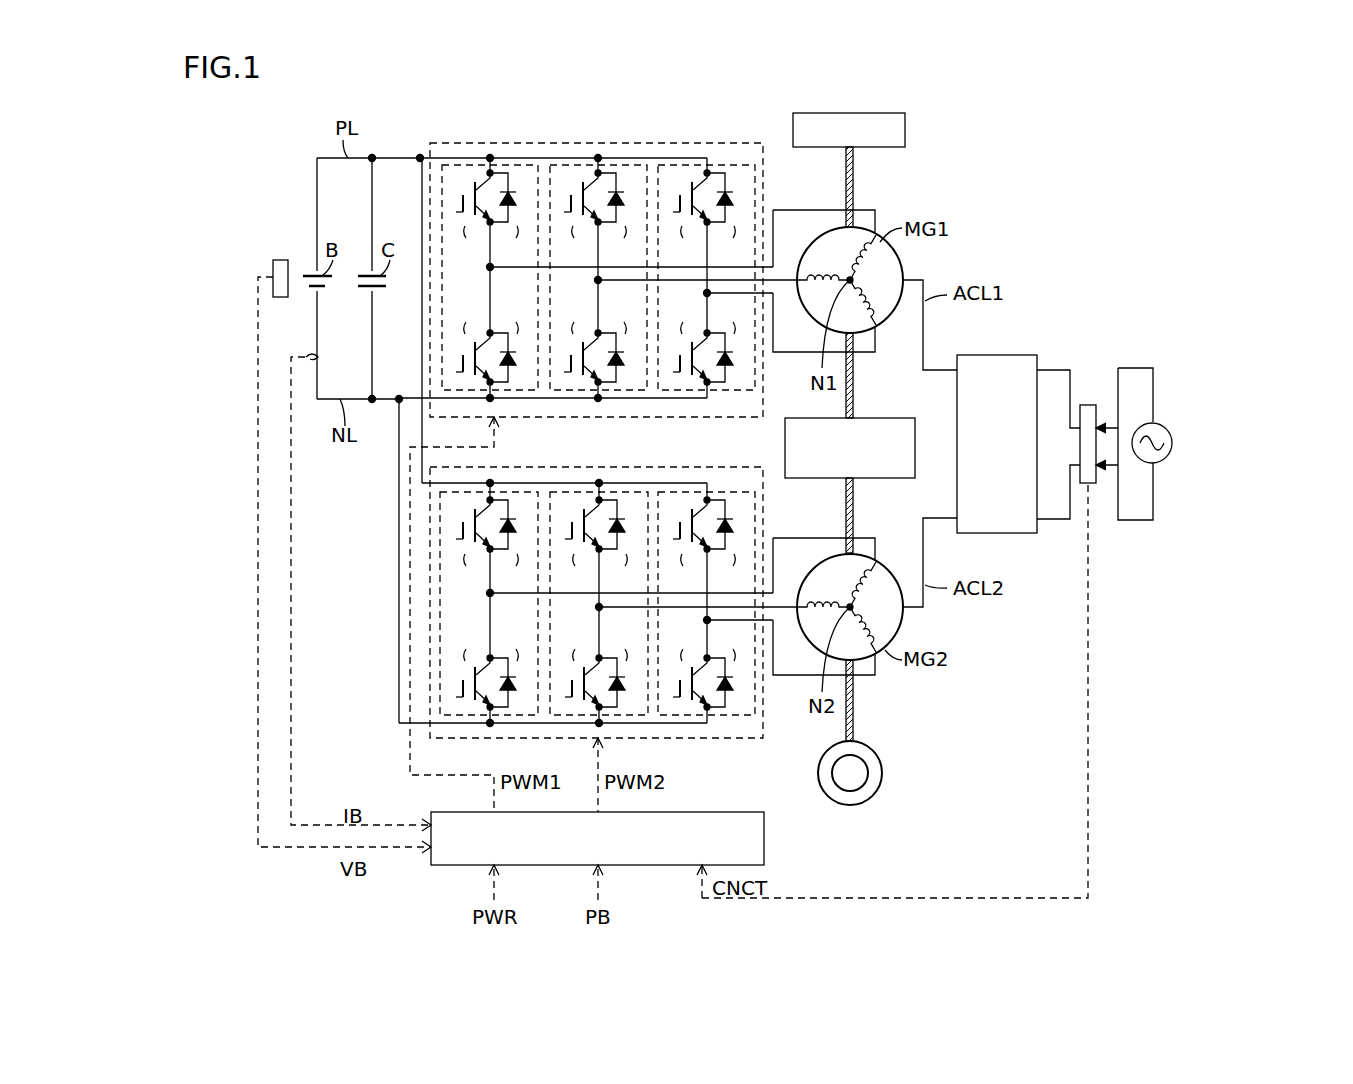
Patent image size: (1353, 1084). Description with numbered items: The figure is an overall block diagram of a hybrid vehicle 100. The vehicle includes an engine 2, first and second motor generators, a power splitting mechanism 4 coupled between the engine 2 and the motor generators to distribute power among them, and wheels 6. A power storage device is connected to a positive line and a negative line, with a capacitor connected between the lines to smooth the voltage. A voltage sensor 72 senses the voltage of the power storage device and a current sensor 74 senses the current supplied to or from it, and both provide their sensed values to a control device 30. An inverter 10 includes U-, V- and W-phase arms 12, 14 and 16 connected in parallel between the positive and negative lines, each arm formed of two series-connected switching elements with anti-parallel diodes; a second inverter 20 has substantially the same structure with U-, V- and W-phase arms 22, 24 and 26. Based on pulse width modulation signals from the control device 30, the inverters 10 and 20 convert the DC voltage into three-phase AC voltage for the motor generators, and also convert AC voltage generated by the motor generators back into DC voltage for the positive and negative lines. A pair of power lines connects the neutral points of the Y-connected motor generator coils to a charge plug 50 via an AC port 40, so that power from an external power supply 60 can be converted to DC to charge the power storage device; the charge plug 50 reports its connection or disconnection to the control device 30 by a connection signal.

The hybrid vehicle 100 is at (991, 91).
The engine 2 is at (905, 130).
The power splitting mechanism 4 is at (888, 478).
The wheels 6 is at (883, 775).
The inverter 10 is at (581, 277).
The U-phase arm 12 is at (504, 165).
The V-phase arm 14 is at (613, 165).
The W-phase arm 16 is at (722, 165).
The inverter 20 is at (581, 599).
The U-phase arm 22 is at (528, 492).
The V-phase arm 24 is at (632, 492).
The W-phase arm 26 is at (740, 492).
The control device 30 is at (718, 812).
The AC port 40 is at (998, 355).
The charge plug 50 is at (1088, 405).
The power supply 60 is at (1173, 443).
The voltage sensor 72 is at (281, 260).
The current sensor 74 is at (320, 357).